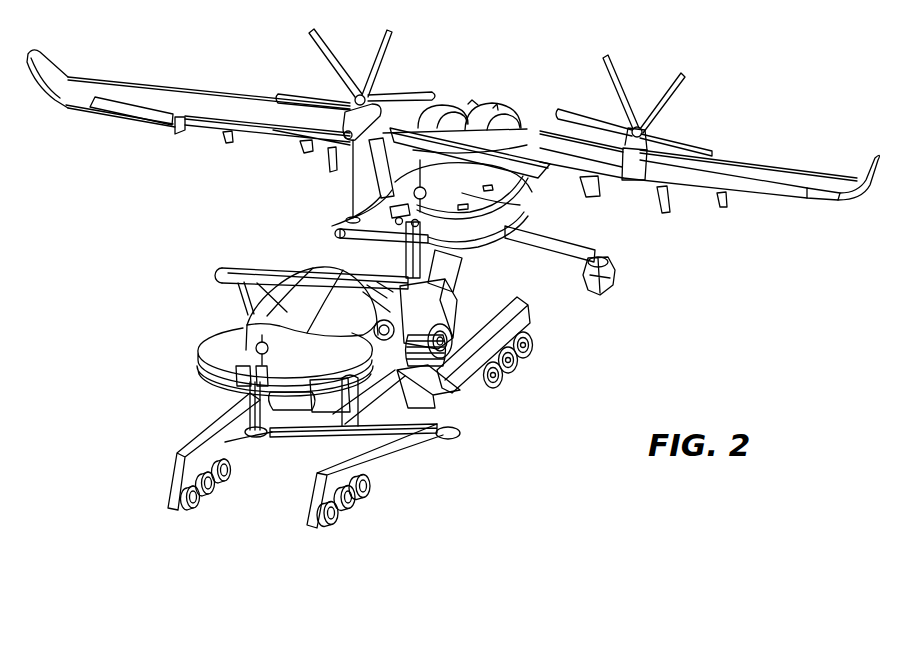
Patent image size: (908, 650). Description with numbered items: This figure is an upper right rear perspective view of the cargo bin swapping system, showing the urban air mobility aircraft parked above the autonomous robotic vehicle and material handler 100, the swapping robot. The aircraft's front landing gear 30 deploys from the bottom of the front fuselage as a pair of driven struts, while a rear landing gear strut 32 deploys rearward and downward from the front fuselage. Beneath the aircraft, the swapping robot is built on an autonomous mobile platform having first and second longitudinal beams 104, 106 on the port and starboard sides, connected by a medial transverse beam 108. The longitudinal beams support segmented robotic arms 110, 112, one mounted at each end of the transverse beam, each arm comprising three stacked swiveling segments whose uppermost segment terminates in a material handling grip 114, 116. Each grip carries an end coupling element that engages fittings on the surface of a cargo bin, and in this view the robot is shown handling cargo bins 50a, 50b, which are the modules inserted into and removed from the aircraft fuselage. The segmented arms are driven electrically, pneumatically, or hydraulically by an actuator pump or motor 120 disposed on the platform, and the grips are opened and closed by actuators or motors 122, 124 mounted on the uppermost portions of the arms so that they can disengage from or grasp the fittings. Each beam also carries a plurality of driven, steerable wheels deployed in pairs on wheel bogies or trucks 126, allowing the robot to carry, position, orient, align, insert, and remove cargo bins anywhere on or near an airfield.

The front landing gear 30 is at (575, 252).
The rear landing gear strut 32 is at (455, 281).
The cargo bin 50a is at (522, 214).
The cargo bin 50b is at (258, 330).
The autonomous robotic vehicle and material handler 100 is at (163, 435).
The first longitudinal beam 104 is at (220, 427).
The second longitudinal beam 106 is at (448, 390).
The medial transverse beam 108 is at (330, 431).
The segmented robotic arm 110 is at (265, 268).
The segmented robotic arm 112 is at (385, 438).
The material handling grip 114 is at (363, 237).
The material handling grip 116 is at (212, 347).
The actuator pump or motor 120 is at (443, 373).
The actuator or motor 122 is at (390, 210).
The actuator or motor 124 is at (214, 380).
The wheel bogies or trucks 126 is at (530, 360).